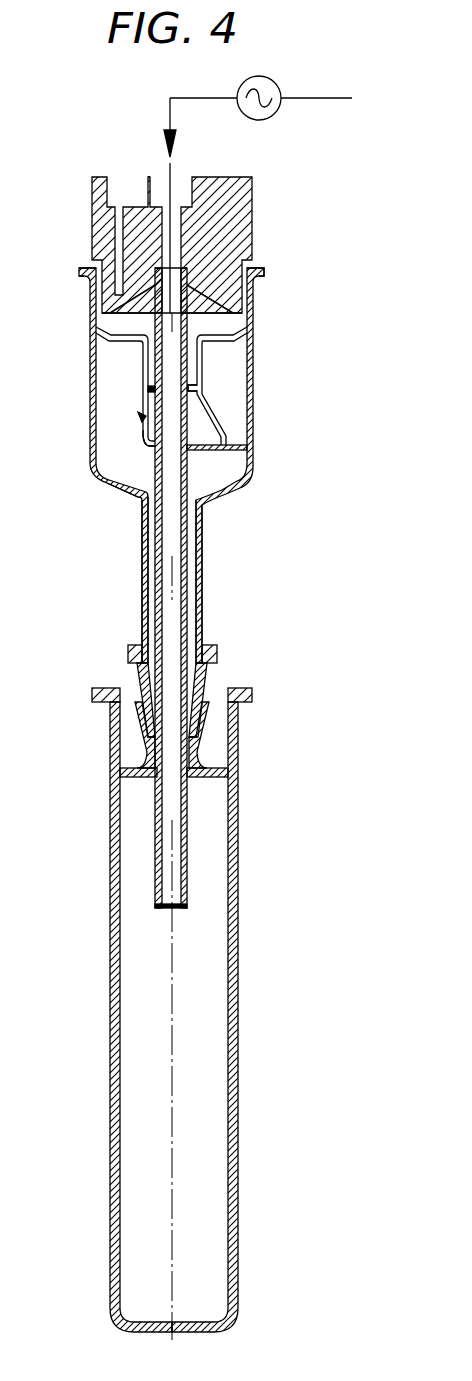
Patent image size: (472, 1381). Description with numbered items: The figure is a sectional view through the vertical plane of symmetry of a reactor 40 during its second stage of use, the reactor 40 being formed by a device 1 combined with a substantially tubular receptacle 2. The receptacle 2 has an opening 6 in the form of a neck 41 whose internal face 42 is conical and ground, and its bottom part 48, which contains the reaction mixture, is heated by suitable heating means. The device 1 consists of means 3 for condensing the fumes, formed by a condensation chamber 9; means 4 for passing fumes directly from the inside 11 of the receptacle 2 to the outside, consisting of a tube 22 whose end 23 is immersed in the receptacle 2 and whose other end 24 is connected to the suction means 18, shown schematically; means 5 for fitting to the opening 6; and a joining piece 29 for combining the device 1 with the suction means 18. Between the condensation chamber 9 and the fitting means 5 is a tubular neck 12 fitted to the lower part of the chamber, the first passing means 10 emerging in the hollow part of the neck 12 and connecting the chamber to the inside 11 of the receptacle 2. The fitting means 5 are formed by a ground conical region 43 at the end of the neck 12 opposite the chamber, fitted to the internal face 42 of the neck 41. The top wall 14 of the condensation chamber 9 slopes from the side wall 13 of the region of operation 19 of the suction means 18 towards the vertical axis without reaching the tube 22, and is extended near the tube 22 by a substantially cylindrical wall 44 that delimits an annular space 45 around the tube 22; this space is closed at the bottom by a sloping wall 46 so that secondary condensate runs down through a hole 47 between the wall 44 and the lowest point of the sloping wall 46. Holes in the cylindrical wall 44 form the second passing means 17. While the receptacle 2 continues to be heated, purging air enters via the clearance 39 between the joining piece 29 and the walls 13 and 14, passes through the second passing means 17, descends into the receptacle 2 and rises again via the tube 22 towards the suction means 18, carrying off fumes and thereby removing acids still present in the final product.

The device 1 is at (177, 448).
The receptacle 2 is at (172, 1017).
The means for condensing the fumes 3 is at (182, 465).
The means for passing fumes 4 is at (141, 417).
The fitting means 5 is at (126, 653).
The opening 6 is at (169, 667).
The condensation chamber 9 is at (108, 450).
The first passing means 10 is at (145, 500).
The inside of the receptacle 11 is at (125, 1062).
The tubular neck 12 is at (142, 574).
The side wall 13 is at (255, 290).
The top wall 14 is at (90, 419).
The second passing means 17 is at (143, 388).
The suction means 18 is at (316, 98).
The region of operation of the suction means 19 is at (98, 266).
The tube 22 is at (162, 597).
The end of the tube 23 is at (158, 908).
The other end of the tube 24 is at (190, 262).
The joining piece 29 is at (240, 203).
The clearance 39 is at (105, 318).
The reactor 40 is at (212, 713).
The neck 41 is at (193, 737).
The internal face 42 is at (207, 708).
The conical region 43 is at (215, 662).
The cylindrical wall 44 is at (245, 386).
The annular space 45 is at (191, 378).
The sloping wall 46 is at (142, 440).
The hole 47 is at (250, 448).
The bottom part 48 is at (218, 1240).